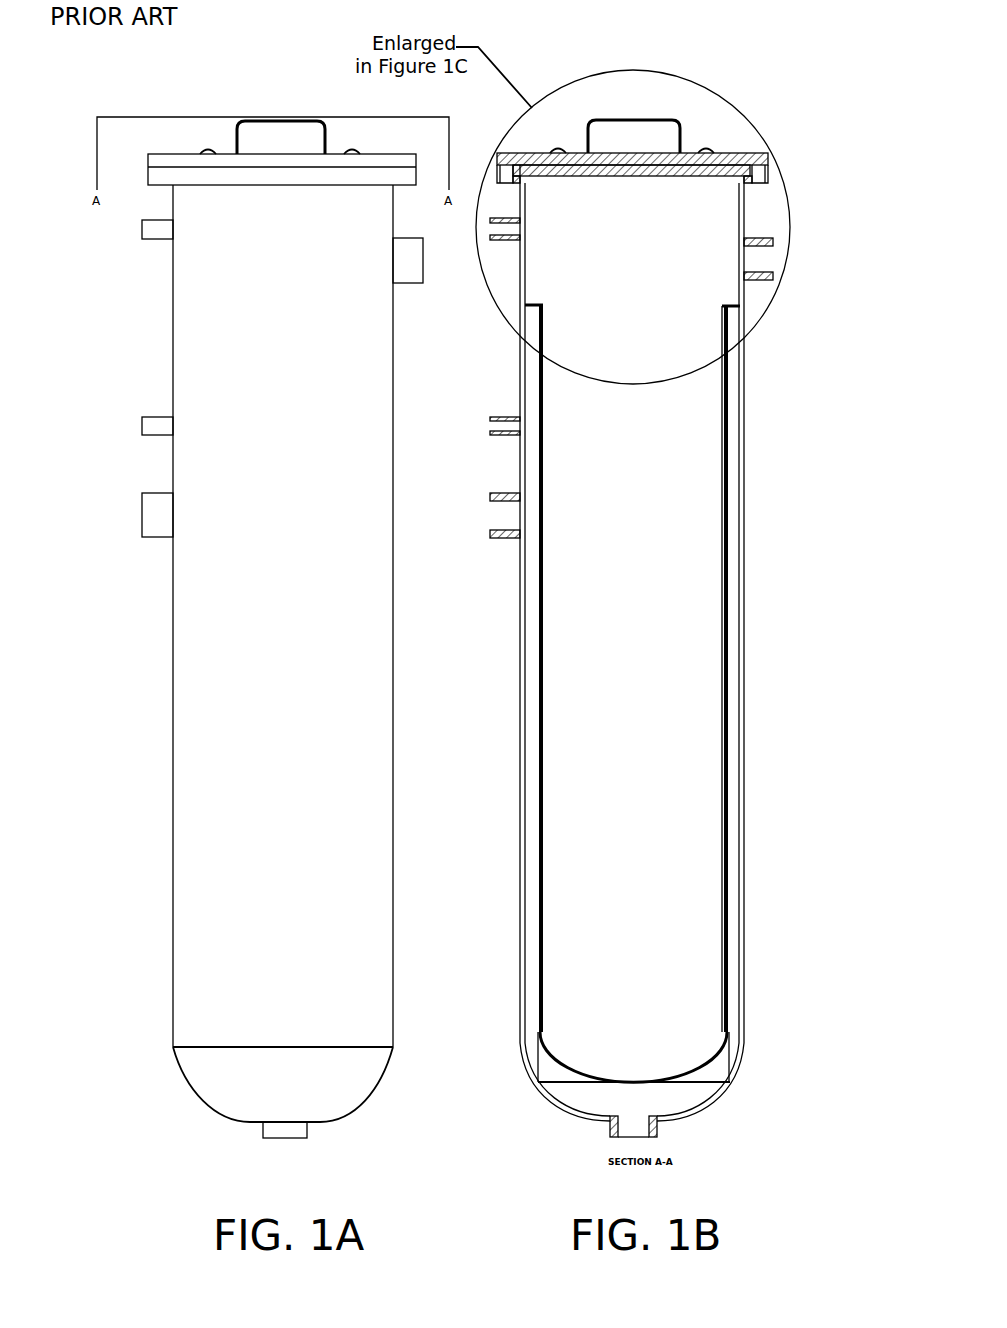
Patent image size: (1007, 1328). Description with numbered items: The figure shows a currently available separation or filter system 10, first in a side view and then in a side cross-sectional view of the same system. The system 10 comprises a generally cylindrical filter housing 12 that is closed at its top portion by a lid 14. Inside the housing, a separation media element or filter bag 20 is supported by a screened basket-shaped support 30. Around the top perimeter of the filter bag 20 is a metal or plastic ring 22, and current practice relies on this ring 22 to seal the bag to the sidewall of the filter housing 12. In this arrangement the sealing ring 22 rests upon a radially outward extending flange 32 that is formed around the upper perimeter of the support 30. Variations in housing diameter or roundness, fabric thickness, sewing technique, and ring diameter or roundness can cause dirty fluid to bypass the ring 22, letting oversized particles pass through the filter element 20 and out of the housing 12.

In FIG. 1A, the separation system 10 is at (226, 629).
In FIG. 1B, the separation system 10 is at (643, 573).
In FIG. 1A, the filter housing 12 is at (163, 319).
In FIG. 1B, the filter housing 12 is at (743, 641).
In FIG. 1A, the lid 14 is at (145, 159).
In FIG. 1B, the lid 14 is at (735, 150).
In FIG. 1B, the separation media element 20 is at (712, 487).
In FIG. 1B, the ring 22 is at (737, 302).
In FIG. 1B, the screened basket-shaped support 30 is at (731, 448).
In FIG. 1B, the flange 32 is at (735, 317).